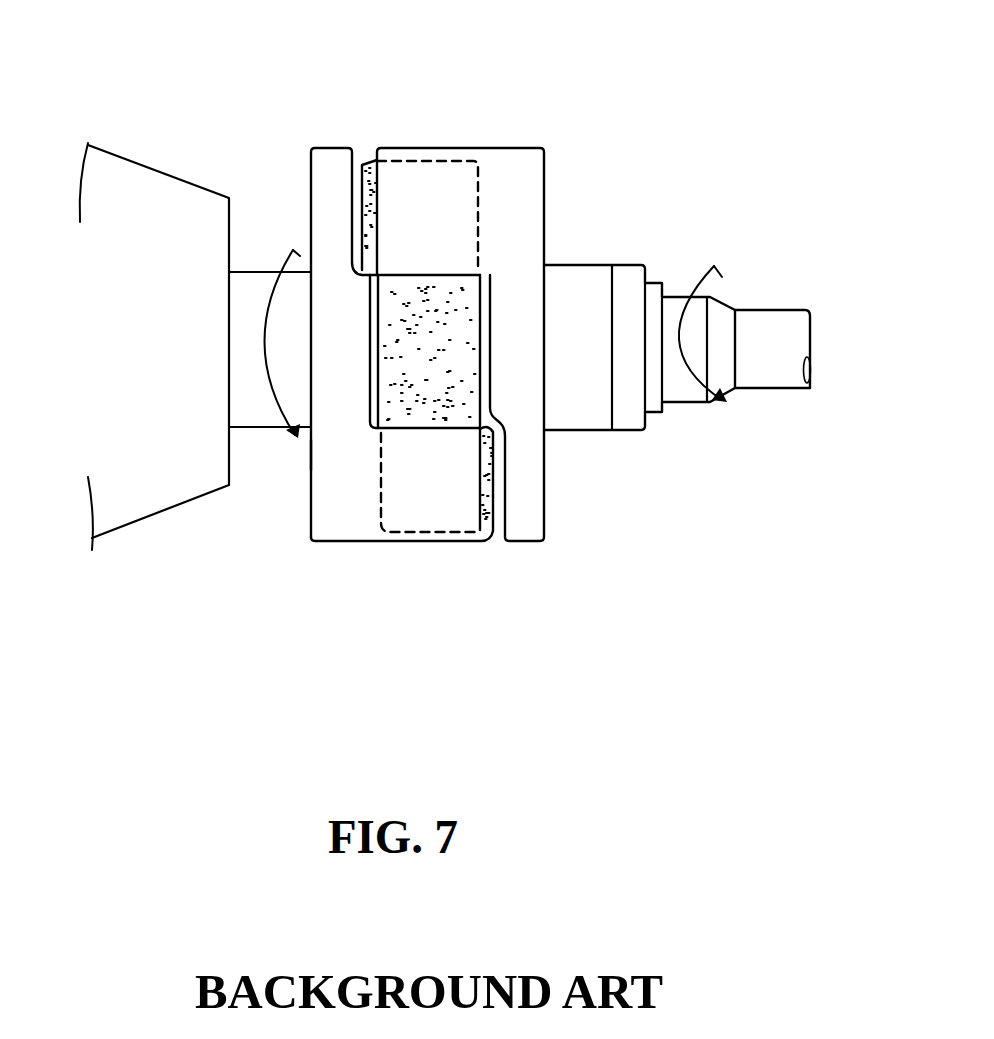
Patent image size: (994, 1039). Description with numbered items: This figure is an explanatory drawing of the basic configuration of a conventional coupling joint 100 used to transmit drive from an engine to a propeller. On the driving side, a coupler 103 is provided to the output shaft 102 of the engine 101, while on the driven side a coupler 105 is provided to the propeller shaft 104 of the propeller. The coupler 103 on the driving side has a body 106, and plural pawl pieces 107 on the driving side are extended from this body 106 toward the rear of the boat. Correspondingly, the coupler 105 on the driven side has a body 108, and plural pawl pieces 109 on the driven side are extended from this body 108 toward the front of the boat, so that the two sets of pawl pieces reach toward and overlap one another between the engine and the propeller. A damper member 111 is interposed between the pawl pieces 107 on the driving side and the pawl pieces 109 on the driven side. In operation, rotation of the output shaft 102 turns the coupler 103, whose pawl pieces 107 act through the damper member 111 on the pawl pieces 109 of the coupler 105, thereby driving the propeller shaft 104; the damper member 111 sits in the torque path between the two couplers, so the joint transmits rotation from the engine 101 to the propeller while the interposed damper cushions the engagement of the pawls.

The coupling joint 100 is at (562, 85).
The engine 101 is at (122, 160).
The output shaft 102 is at (255, 285).
The coupler on the driving side 103 is at (306, 522).
The propeller shaft 104 is at (773, 315).
The coupler on the driven side 105 is at (550, 168).
The body of the coupler on the driving side 106 is at (317, 453).
The pawl pieces on the driving side 107 is at (415, 545).
The body of the coupler on the driven side 108 is at (535, 231).
The pawl pieces on the driven side 109 is at (422, 150).
The damper member 111 is at (458, 362).